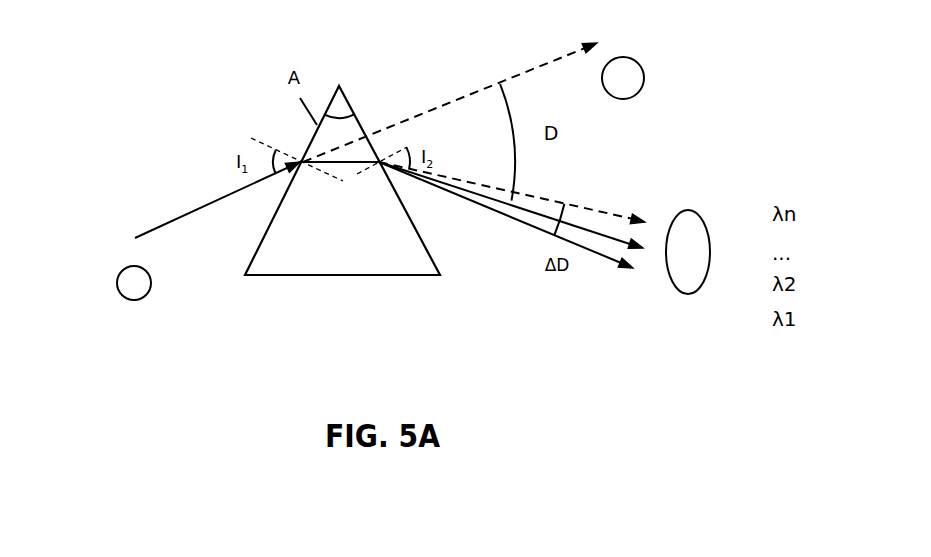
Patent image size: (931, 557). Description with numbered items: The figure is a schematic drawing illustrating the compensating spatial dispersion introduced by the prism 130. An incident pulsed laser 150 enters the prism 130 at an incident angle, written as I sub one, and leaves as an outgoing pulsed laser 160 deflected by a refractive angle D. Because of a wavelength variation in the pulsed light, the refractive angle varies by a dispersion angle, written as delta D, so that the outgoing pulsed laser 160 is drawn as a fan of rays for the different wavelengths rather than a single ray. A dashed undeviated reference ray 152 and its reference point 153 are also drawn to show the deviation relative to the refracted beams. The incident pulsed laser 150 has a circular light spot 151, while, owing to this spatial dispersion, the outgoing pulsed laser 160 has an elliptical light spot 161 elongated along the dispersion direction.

The prism 130 is at (335, 288).
The pulsed laser 150 is at (165, 220).
The circular light spot 151 is at (108, 297).
The undeviated reference ray 152 is at (452, 97).
The undeviated reference point 153 is at (650, 77).
The pulsed laser 160 is at (512, 233).
The elliptical light spot 161 is at (707, 210).